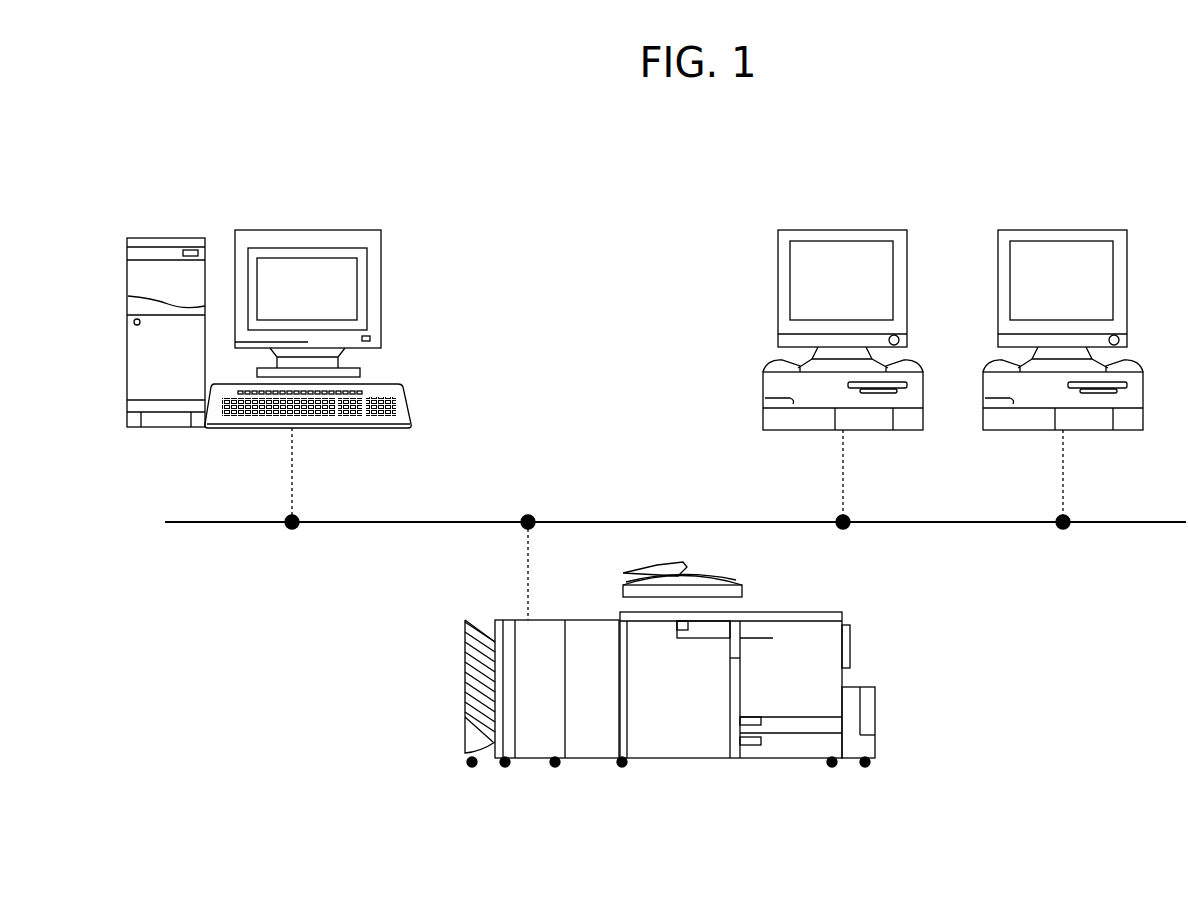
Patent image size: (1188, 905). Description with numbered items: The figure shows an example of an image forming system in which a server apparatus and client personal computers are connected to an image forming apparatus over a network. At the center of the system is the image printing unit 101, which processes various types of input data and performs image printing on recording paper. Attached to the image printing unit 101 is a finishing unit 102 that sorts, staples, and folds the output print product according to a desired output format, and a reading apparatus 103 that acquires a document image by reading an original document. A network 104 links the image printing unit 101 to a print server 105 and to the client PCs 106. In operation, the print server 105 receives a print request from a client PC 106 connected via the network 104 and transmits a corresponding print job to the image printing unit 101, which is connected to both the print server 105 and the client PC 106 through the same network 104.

The image printing unit 101 is at (680, 740).
The finishing unit 102 is at (518, 735).
The reading apparatus 103 is at (750, 580).
The network 104 is at (680, 520).
The print server 105 is at (310, 228).
The client PC 106 is at (843, 228).